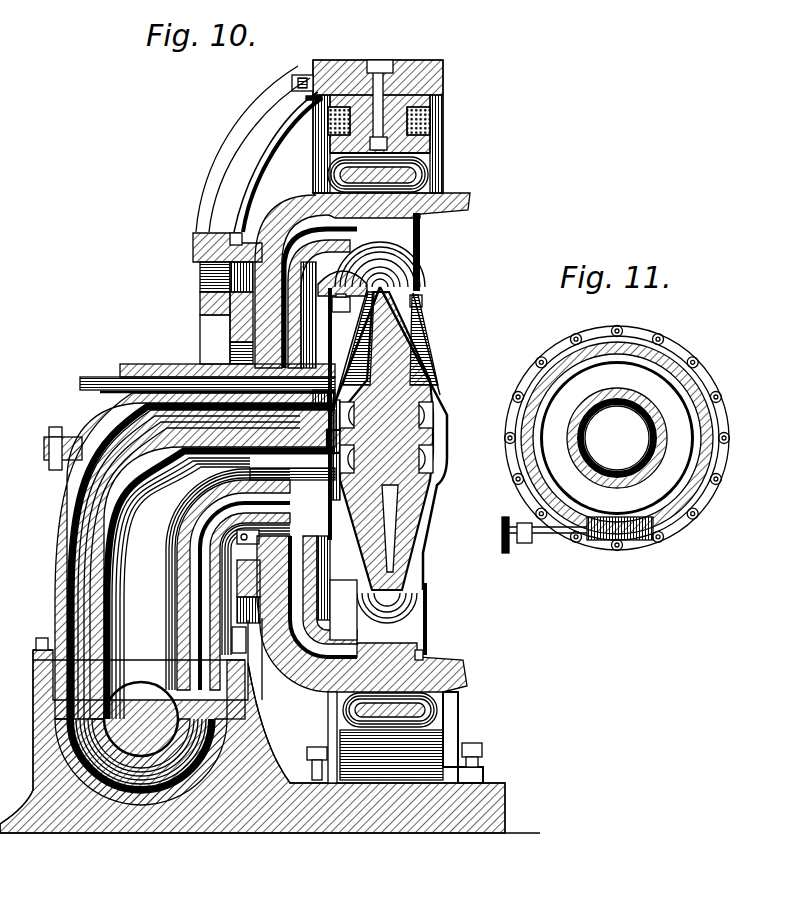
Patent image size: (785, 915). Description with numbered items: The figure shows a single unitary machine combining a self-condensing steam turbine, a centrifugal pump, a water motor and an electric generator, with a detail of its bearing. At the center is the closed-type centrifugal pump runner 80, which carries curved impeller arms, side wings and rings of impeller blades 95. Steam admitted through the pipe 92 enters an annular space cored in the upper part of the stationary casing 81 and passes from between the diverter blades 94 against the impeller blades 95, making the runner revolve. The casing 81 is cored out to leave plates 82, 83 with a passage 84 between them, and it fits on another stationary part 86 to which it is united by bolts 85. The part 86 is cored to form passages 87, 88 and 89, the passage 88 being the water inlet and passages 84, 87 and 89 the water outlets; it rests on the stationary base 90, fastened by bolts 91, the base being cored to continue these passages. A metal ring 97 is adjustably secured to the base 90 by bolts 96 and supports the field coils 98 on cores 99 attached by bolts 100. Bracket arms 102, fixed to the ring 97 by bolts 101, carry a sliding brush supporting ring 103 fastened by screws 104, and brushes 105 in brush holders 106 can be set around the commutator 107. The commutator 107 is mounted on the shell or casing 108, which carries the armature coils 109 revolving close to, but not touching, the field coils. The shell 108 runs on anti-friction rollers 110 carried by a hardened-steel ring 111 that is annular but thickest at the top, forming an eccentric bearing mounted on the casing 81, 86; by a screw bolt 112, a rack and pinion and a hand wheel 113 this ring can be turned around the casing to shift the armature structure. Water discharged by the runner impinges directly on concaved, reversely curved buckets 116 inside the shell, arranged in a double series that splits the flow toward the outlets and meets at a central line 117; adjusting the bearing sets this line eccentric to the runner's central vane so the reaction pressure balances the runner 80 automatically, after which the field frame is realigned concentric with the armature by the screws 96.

In FIG. 10, the centrifugal pump runner 80 is at (448, 393).
In FIG. 10, the upper part of the stationary casing 81 is at (108, 420).
In FIG. 10, the plate 82 is at (230, 318).
In FIG. 10, the plate 83 is at (418, 345).
In FIG. 10, the passage 84 is at (425, 365).
In FIG. 10, the bolts 85 is at (47, 430).
In FIG. 10, the stationary part 86 is at (57, 508).
In FIG. 11, the stationary part 86 is at (617, 438).
In FIG. 10, the passage 87 is at (66, 545).
In FIG. 11, the passage 87 is at (622, 391).
In FIG. 10, the passage 88 is at (141, 670).
In FIG. 11, the passage 88 is at (617, 438).
In FIG. 10, the passage 89 is at (249, 670).
In FIG. 10, the stationary base 90 is at (255, 834).
In FIG. 10, the bolts 91 is at (40, 638).
In FIG. 10, the pipe 92 is at (108, 377).
In FIG. 10, the diverter blades 94 is at (420, 289).
In FIG. 10, the impeller blades 95 is at (422, 303).
In FIG. 10, the bolts 96 is at (305, 746).
In FIG. 10, the metal ring 97 is at (314, 130).
In FIG. 10, the field coils 98 is at (432, 120).
In FIG. 10, the cores 99 is at (445, 70).
In FIG. 10, the bolts 100 is at (387, 90).
In FIG. 10, the bolts 101 is at (302, 74).
In FIG. 10, the bracket arms 102 is at (252, 149).
In FIG. 10, the brush supporting ring 103 is at (200, 275).
In FIG. 10, the screws 104 is at (194, 240).
In FIG. 10, the brushes 105 is at (200, 300).
In FIG. 10, the brush holders 106 is at (250, 257).
In FIG. 10, the commutator 107 is at (232, 330).
In FIG. 10, the shell or casing 108 is at (240, 345).
In FIG. 10, the armature coils 109 is at (430, 177).
In FIG. 10, the anti-friction rollers 110 is at (272, 560).
In FIG. 11, the anti-friction rollers 110 is at (620, 335).
In FIG. 10, the ring 111 is at (246, 528).
In FIG. 11, the ring 111 is at (706, 468).
In FIG. 11, the screw bolt 112 is at (553, 542).
In FIG. 11, the hand wheel 113 is at (503, 525).
In FIG. 10, the buckets 116 is at (405, 254).
In FIG. 10, the line 117 is at (403, 274).